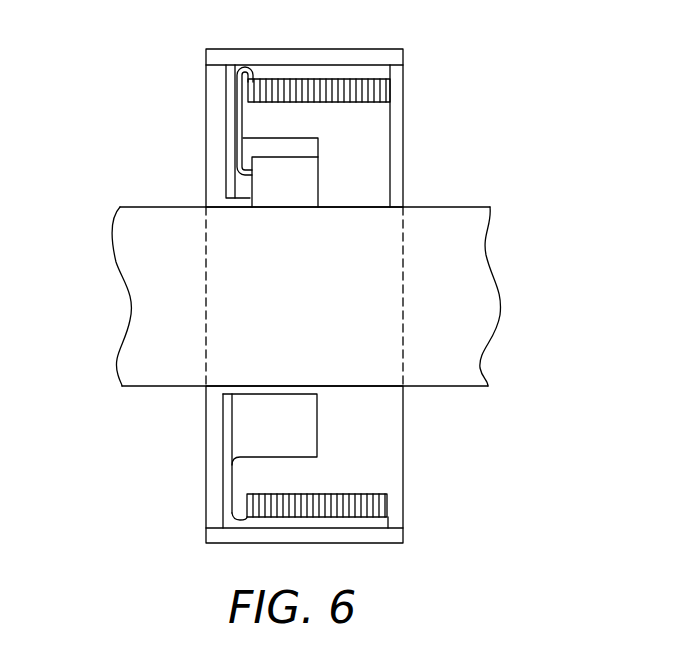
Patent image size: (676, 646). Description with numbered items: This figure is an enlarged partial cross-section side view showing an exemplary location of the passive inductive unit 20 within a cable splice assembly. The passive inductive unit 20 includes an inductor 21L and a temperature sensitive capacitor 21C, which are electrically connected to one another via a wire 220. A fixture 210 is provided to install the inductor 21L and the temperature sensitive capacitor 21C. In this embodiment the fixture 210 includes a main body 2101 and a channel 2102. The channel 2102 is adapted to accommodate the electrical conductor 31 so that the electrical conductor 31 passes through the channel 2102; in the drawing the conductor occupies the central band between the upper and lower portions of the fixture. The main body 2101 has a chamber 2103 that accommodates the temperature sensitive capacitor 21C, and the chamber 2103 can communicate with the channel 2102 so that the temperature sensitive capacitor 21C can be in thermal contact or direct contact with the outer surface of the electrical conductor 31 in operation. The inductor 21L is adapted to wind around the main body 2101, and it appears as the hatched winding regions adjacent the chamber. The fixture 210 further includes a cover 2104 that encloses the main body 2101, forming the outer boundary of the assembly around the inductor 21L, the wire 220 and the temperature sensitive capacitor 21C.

The passive inductive unit 20 is at (122, 160).
The wire 220 is at (233, 116).
The cover 2104 is at (403, 56).
The inductor 21L is at (358, 103).
The temperature sensitive capacitor 21C is at (300, 180).
The channel 2102 is at (490, 250).
The electrical conductor 31 is at (492, 337).
The chamber 2103 is at (257, 423).
The fixture 210 is at (382, 428).
The main body 2101 is at (380, 470).